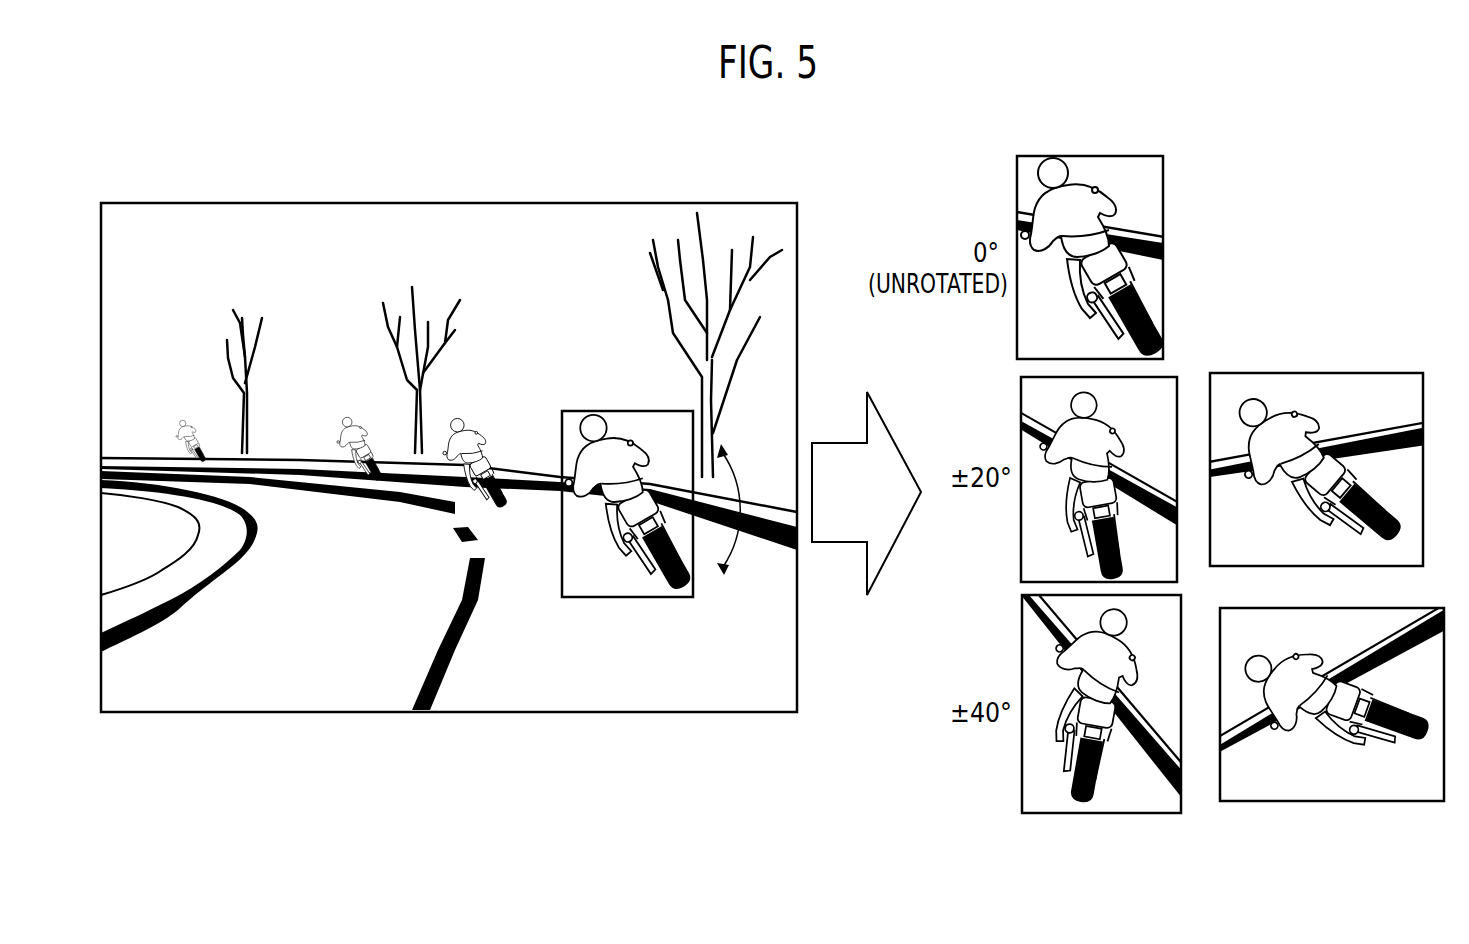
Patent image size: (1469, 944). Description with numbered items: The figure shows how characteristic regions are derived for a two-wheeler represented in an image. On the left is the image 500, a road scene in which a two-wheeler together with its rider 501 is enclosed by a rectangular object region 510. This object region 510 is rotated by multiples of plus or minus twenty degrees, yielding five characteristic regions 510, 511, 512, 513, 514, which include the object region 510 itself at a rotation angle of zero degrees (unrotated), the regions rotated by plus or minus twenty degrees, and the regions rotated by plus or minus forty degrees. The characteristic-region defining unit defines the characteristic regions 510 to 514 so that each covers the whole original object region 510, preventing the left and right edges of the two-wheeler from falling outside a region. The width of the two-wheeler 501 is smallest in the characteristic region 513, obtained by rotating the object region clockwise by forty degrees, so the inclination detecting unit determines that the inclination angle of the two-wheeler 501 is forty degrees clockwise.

The image 500 is at (502, 766).
The two-wheeler 501 is at (648, 567).
The object region 510 is at (697, 567).
The characteristic region 511 is at (1177, 390).
The characteristic region 512 is at (1423, 390).
The characteristic region 513 is at (1123, 817).
The characteristic region 514 is at (1380, 802).